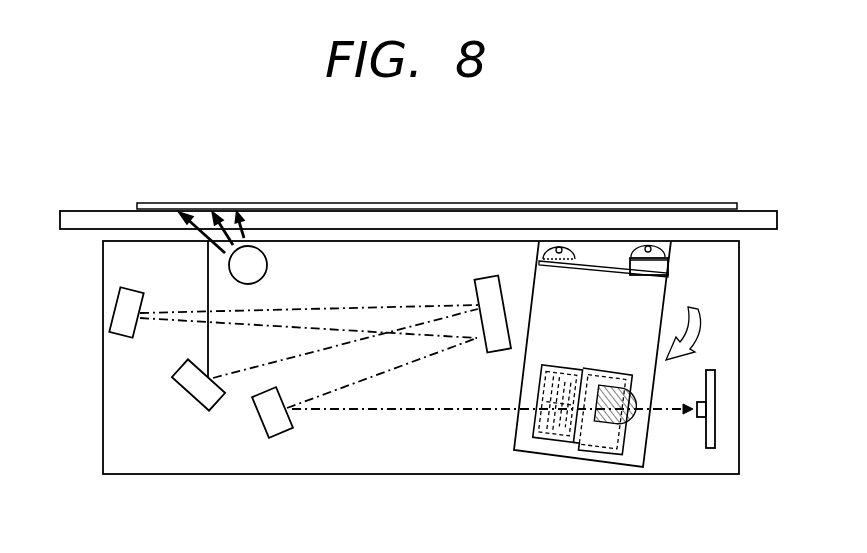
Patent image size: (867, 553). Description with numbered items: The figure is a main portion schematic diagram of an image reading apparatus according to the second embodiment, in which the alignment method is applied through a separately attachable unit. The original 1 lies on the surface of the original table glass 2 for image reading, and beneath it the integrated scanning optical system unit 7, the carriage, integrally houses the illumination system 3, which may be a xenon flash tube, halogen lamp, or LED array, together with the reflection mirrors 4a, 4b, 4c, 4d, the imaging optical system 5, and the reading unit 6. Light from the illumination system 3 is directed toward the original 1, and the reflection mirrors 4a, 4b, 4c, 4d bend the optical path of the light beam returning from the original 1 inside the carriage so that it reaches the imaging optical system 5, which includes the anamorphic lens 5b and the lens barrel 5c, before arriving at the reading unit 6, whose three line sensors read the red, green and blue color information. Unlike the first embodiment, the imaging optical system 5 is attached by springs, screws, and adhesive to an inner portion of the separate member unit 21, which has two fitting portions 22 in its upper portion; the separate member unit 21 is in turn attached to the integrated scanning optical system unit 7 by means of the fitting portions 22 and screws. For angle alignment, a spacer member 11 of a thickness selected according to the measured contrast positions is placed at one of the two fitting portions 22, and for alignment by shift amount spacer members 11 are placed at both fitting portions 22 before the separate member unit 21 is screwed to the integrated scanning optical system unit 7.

The original 1 is at (227, 203).
The original table glass 2 is at (105, 209).
The illumination system 3 is at (266, 263).
The first reflection mirror 4a is at (188, 387).
The second reflection mirror 4b is at (500, 348).
The third reflection mirror 4c is at (120, 312).
The fourth reflection mirror 4d is at (265, 413).
The imaging optical system 5 is at (550, 440).
The anamorphic lens 5b is at (608, 440).
The lens barrel 5c is at (590, 450).
The reading unit 6 is at (710, 448).
The integrated scanning optical system unit 7 is at (741, 272).
The spacer member 11 is at (670, 268).
The separate member unit 21 is at (663, 297).
The fitting portions 22 is at (648, 247).